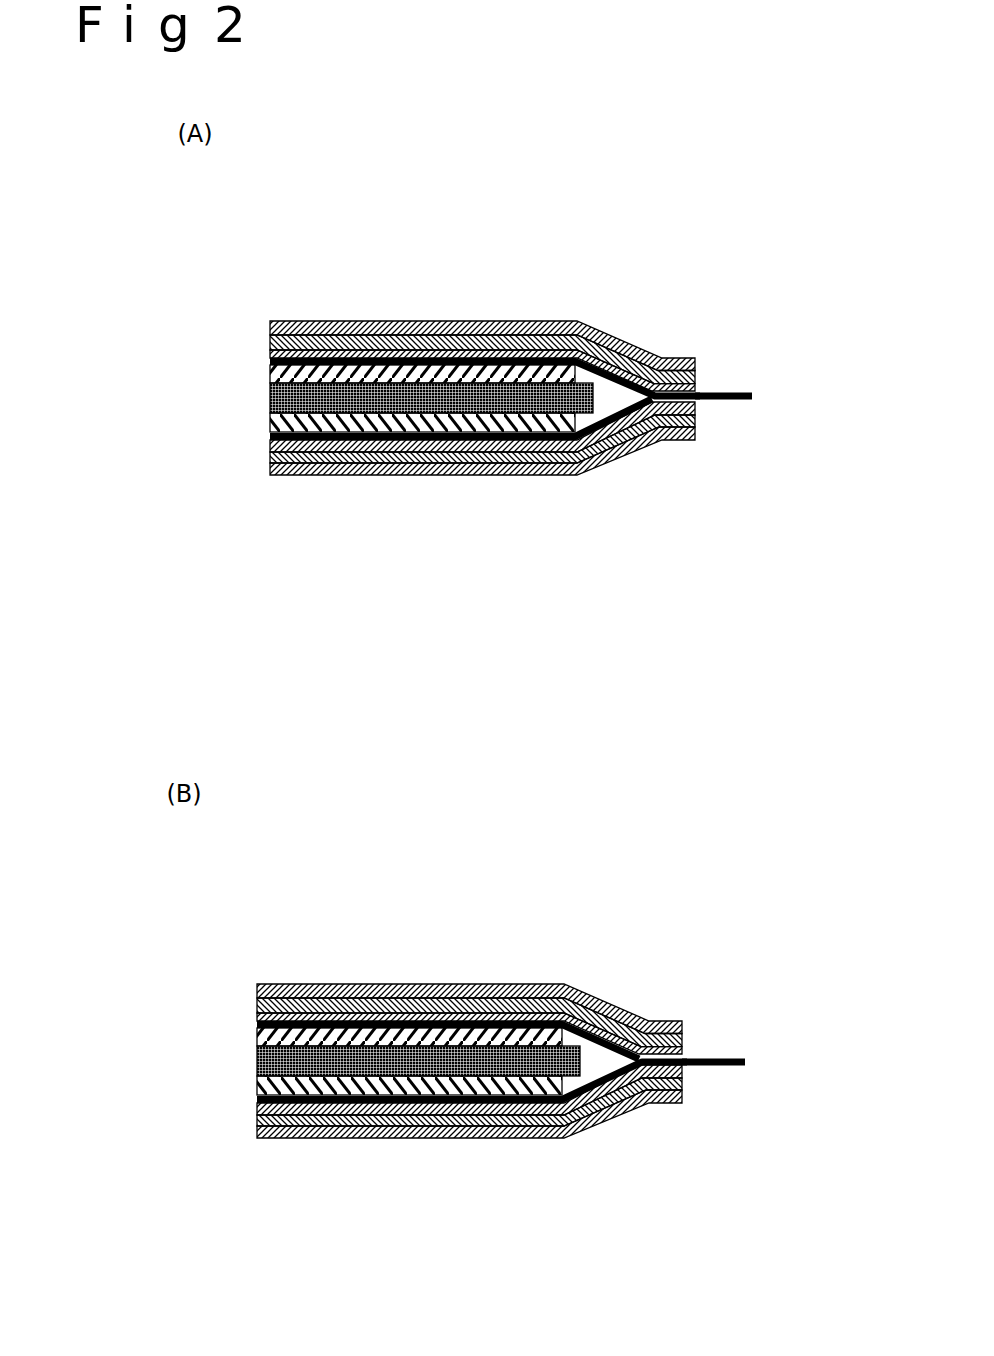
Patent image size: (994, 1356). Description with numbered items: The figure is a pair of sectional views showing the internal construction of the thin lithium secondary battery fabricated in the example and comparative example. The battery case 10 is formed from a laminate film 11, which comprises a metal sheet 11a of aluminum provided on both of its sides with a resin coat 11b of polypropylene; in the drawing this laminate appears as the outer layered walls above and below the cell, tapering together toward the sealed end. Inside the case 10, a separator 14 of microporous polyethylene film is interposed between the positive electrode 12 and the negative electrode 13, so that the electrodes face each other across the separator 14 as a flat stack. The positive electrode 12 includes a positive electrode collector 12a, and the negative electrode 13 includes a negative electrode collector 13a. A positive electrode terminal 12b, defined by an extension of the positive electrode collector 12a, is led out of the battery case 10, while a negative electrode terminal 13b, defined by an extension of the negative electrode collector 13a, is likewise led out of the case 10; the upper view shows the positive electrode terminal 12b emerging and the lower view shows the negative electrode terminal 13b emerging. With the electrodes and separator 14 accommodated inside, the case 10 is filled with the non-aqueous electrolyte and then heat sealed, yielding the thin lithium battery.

The battery case 10 is at (560, 316).
The laminate film 11 is at (430, 232).
The metal sheet 11a is at (305, 323).
The resin coat 11b is at (412, 323).
The positive electrode 12 is at (459, 360).
The positive electrode collector 12a is at (524, 374).
The positive electrode terminal 12b is at (728, 394).
The negative electrode 13 is at (457, 440).
The negative electrode collector 13a is at (520, 428).
The negative electrode terminal 13b is at (727, 1127).
The separator 14 is at (566, 412).